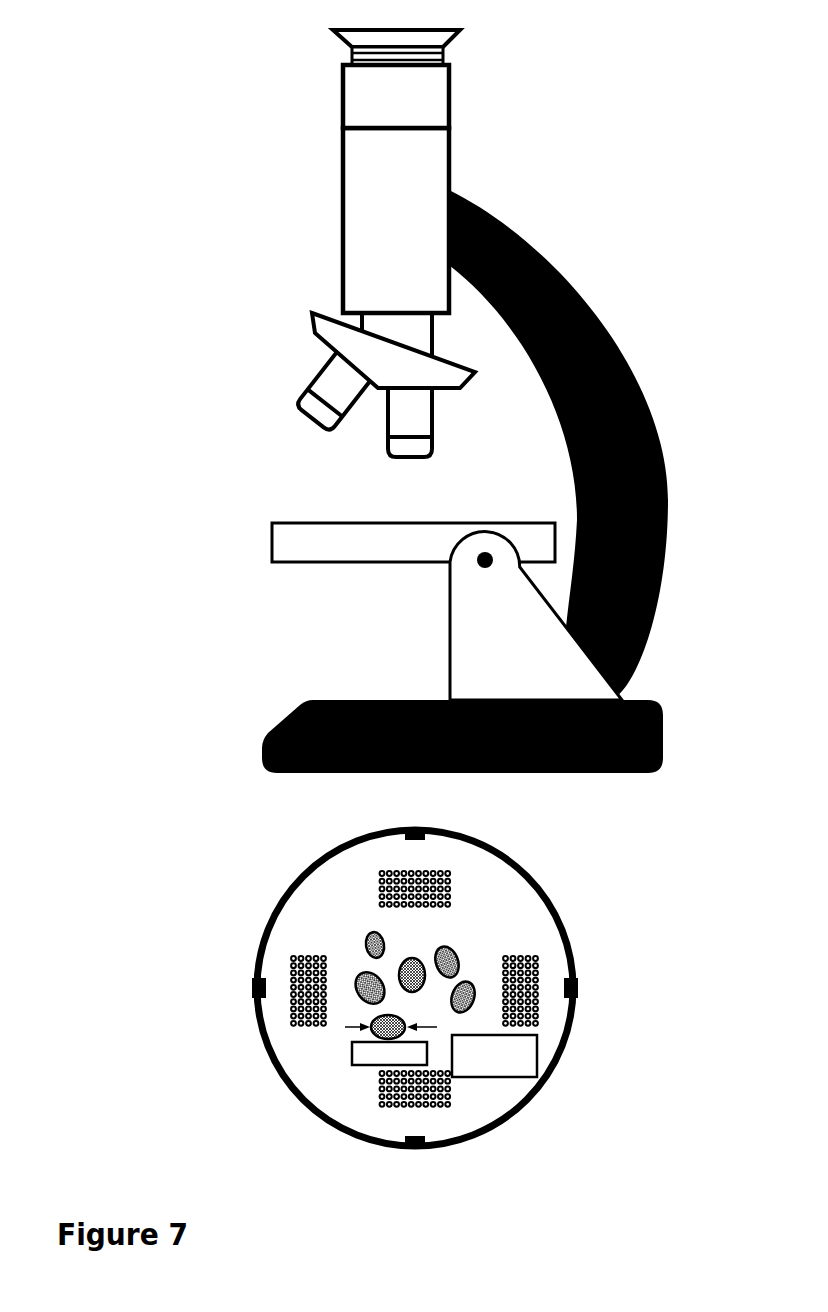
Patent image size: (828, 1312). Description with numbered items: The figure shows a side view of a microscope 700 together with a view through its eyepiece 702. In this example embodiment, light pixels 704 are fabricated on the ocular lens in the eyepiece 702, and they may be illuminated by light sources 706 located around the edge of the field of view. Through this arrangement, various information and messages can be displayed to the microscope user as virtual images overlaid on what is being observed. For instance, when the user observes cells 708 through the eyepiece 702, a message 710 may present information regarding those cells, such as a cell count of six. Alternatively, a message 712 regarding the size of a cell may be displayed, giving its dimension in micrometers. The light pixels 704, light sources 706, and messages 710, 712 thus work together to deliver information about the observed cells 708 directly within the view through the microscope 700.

The microscope 700 is at (196, 333).
The eyepiece 702 is at (342, 92).
The light pixels 704 is at (309, 955).
The light sources 706 is at (252, 988).
The cells 708 is at (440, 949).
The message 710 is at (510, 1078).
The message 712 is at (370, 1066).